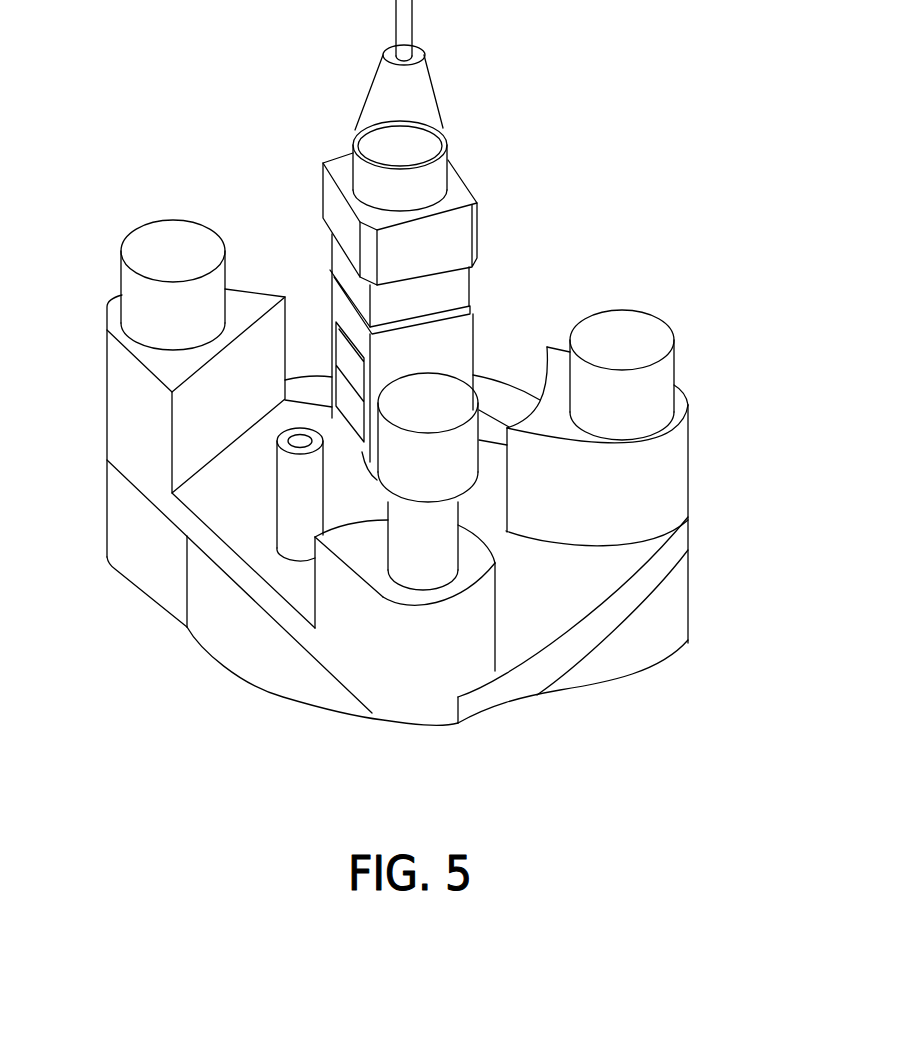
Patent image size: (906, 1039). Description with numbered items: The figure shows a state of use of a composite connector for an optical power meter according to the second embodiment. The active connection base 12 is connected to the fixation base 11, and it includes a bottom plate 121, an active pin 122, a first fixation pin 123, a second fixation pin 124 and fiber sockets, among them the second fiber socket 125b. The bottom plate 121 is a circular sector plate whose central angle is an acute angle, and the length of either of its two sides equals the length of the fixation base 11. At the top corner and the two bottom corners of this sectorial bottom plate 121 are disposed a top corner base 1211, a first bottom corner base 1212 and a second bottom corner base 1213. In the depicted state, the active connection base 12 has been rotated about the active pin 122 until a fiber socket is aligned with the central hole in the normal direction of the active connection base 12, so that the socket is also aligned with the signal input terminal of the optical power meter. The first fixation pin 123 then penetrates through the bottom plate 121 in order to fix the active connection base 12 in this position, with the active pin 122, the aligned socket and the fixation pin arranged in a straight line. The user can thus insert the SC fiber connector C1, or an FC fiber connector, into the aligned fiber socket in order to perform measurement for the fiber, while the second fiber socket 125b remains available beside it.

The fixation base 11 is at (242, 658).
The active connection base 12 is at (588, 578).
The bottom plate 121 is at (290, 573).
The top corner base 1211 is at (120, 407).
The first bottom corner base 1212 is at (668, 465).
The second bottom corner base 1213 is at (462, 652).
The active pin 122 is at (160, 237).
The first fixation pin 123 is at (622, 337).
The second fixation pin 124 is at (445, 405).
The second fiber socket 125b is at (293, 502).
The SC fiber connector C1 is at (452, 245).